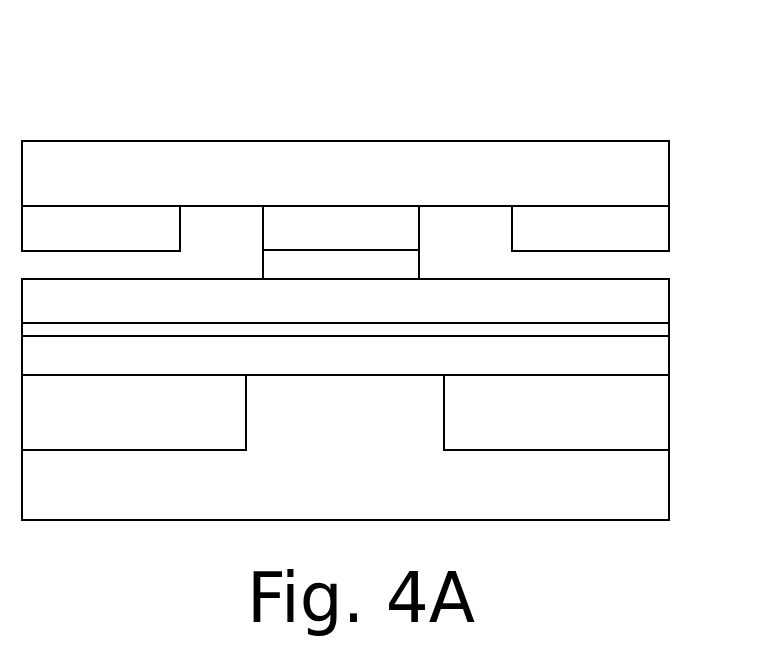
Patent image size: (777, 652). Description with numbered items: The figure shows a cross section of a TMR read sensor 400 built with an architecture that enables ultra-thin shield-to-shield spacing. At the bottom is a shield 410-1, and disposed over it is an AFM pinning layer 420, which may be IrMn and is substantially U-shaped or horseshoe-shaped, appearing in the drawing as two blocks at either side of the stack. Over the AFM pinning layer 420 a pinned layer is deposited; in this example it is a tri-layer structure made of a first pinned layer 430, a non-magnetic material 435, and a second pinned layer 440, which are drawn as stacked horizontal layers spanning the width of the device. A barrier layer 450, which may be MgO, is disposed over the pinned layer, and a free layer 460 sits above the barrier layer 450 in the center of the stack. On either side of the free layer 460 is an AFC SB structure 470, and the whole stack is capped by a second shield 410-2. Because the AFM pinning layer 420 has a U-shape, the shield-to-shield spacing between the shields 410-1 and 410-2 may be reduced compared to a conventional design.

The TMR read sensor 400 is at (620, 74).
The shield 410-1 is at (345, 447).
The shield 410-2 is at (345, 173).
The AFM pinning layer 420 is at (345, 412).
The first pinned layer 430 is at (345, 355).
The non-magnetic material 435 is at (669, 329).
The second pinned layer 440 is at (345, 301).
The barrier layer 450 is at (341, 264).
The free layer 460 is at (341, 228).
The AFC SB structure 470 is at (345, 228).